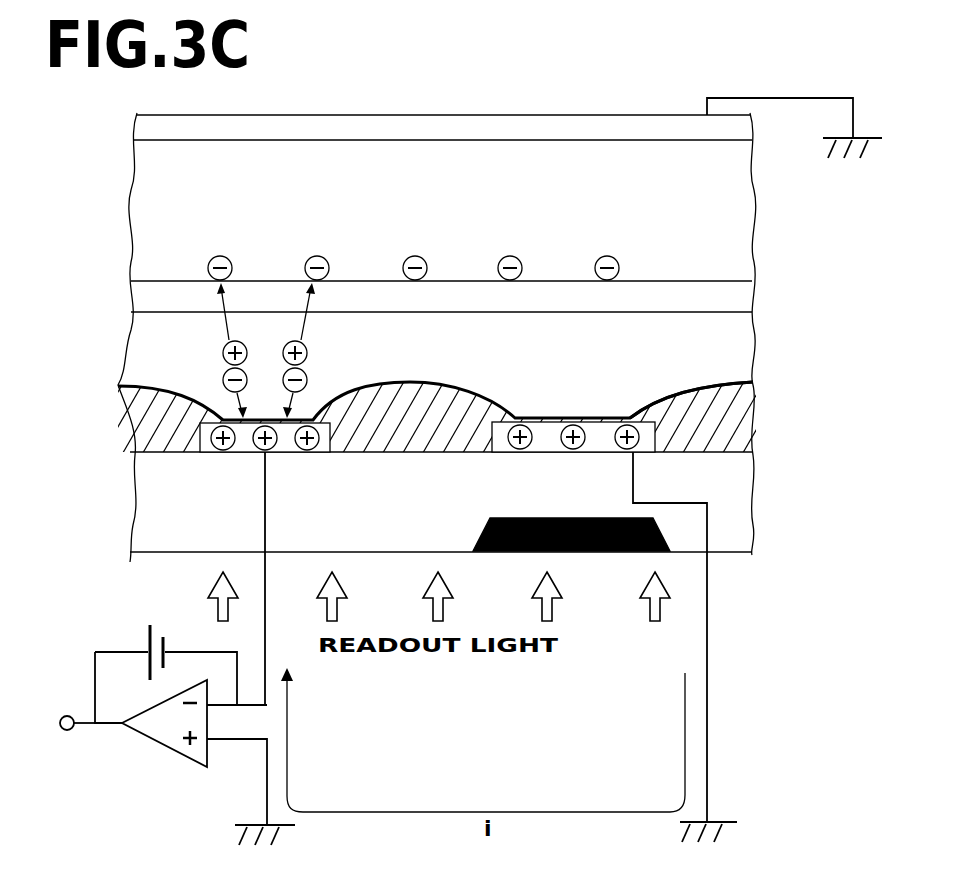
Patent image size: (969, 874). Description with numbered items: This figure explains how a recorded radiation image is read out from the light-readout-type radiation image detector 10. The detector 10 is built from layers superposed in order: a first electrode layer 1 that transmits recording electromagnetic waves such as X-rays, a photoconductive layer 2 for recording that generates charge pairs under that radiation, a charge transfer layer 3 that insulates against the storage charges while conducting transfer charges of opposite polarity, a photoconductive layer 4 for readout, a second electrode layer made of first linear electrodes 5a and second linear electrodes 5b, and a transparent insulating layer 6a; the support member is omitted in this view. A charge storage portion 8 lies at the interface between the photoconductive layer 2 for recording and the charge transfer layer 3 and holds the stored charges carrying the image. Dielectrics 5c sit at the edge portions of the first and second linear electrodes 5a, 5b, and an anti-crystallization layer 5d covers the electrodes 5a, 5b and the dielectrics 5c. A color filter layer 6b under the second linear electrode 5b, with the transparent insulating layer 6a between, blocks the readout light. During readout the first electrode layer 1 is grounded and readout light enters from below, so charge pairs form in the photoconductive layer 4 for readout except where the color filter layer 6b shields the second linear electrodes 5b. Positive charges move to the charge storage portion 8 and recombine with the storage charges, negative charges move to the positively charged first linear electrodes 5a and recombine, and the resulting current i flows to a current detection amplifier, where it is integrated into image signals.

The first electrode layer 1 is at (135, 130).
The photoconductive layer for recording 2 is at (133, 203).
The charge transfer layer 3 is at (131, 304).
The photoconductive layer for readout 4 is at (132, 355).
The first linear electrodes 5a is at (333, 418).
The second linear electrodes 5b is at (547, 430).
The dielectrics 5c is at (185, 447).
The anti-crystallization layer 5d is at (678, 386).
The transparent insulating layer 6a is at (140, 495).
The color filter layer 6b is at (595, 551).
The charge storage portion 8 is at (167, 278).
The radiation image detector 10 is at (661, 98).